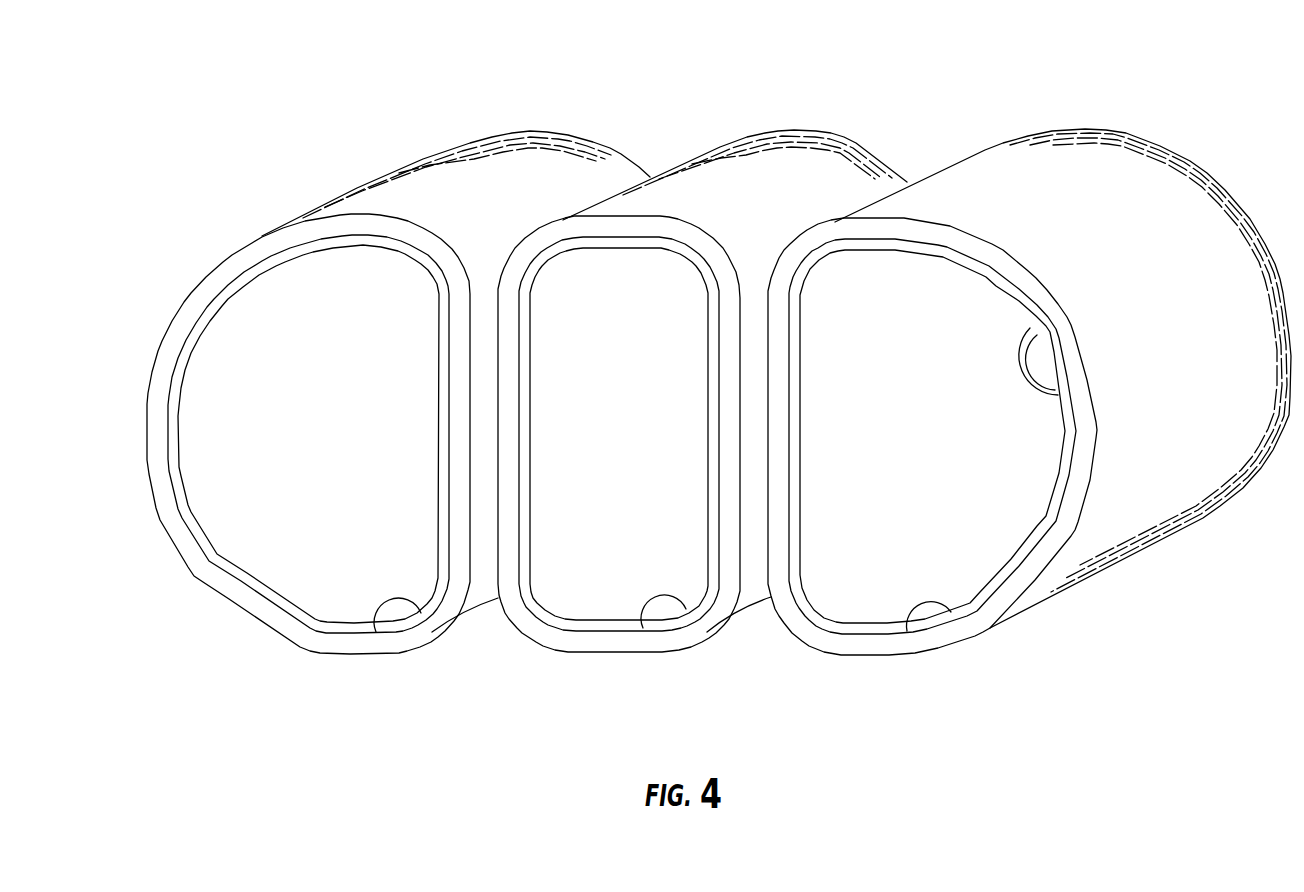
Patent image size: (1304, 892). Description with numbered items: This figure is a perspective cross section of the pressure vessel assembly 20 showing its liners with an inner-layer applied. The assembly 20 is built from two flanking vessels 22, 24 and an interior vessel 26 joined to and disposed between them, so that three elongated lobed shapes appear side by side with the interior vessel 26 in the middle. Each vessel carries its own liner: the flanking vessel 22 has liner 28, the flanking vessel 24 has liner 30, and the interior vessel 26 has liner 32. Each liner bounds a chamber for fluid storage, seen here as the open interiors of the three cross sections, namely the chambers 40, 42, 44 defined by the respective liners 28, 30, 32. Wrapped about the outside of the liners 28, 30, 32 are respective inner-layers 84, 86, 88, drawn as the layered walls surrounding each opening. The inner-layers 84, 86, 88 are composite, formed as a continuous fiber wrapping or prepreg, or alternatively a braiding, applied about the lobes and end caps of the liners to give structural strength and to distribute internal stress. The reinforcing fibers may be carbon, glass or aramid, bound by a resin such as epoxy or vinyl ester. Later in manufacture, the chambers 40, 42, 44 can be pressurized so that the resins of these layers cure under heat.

The pressure vessel assembly 20 is at (946, 118).
The flanking vessel 22 is at (398, 448).
The flanking vessel 24 is at (1019, 447).
The interior vessel 26 is at (696, 448).
The liner 28 is at (376, 632).
The liner 30 is at (907, 631).
The liner 32 is at (643, 628).
The chamber 40 is at (344, 572).
The chamber 42 is at (921, 572).
The chamber 44 is at (632, 572).
The inner-layer 84 is at (218, 602).
The inner-layer 86 is at (820, 645).
The inner-layer 88 is at (553, 641).